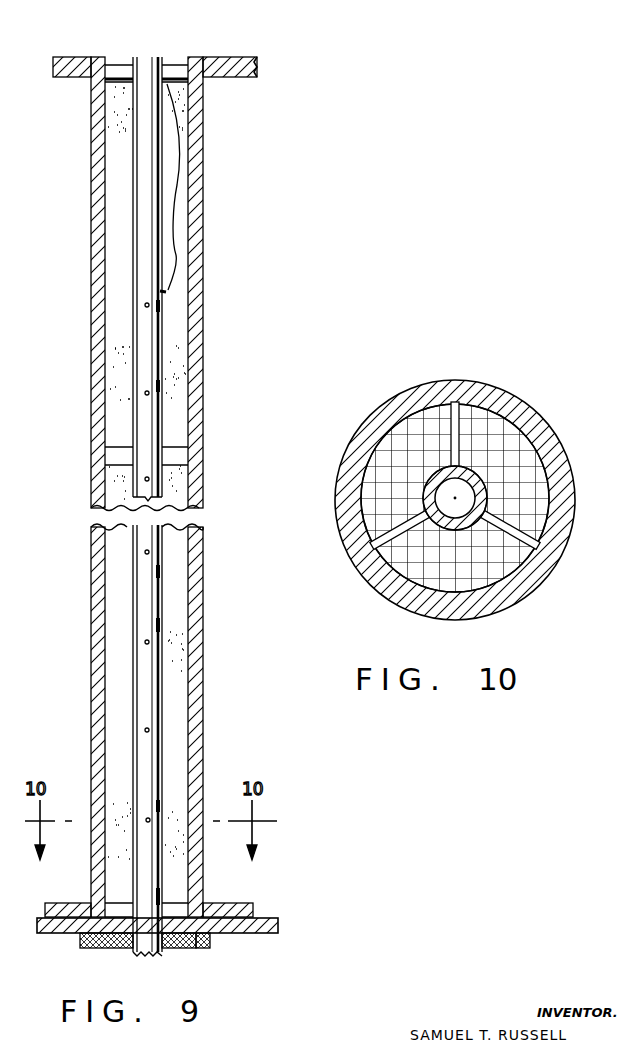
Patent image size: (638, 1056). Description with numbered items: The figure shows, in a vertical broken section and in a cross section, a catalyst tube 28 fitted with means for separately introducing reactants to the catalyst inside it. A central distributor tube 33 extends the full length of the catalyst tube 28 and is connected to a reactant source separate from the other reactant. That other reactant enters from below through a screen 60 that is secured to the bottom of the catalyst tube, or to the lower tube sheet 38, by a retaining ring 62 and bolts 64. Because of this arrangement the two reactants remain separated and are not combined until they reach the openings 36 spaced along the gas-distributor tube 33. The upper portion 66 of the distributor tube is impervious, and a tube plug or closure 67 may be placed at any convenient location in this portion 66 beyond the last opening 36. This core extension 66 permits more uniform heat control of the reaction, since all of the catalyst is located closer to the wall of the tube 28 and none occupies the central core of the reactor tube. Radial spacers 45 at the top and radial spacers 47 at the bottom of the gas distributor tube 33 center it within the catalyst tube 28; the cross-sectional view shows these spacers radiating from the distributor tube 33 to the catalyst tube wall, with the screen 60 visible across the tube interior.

In FIG. 9, the catalyst tube 28 is at (197, 336).
In FIG. 9, the central distributor tube 33 is at (160, 715).
In FIG. 10, the central distributor tube 33 is at (472, 478).
In FIG. 9, the openings 36 is at (146, 307).
In FIG. 10, the openings 36 is at (428, 497).
In FIG. 9, the lower tube sheet 38 is at (247, 928).
In FIG. 9, the radial spacers 45 is at (173, 65).
In FIG. 9, the radial spacers 47 is at (120, 916).
In FIG. 10, the radial spacers 47 is at (390, 533).
In FIG. 9, the screen 60 is at (117, 946).
In FIG. 10, the screen 60 is at (467, 570).
In FIG. 9, the retaining ring 62 is at (192, 946).
In FIG. 9, the bolts 64 is at (200, 950).
In FIG. 9, the upper portion of the distributor tube 66 is at (178, 189).
In FIG. 9, the tube plug 67 is at (163, 293).